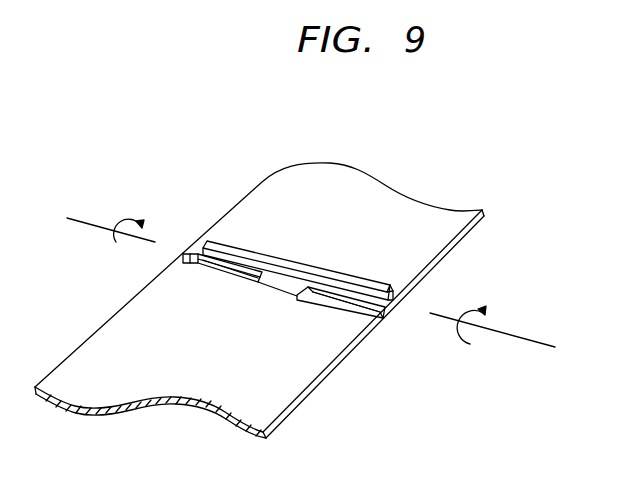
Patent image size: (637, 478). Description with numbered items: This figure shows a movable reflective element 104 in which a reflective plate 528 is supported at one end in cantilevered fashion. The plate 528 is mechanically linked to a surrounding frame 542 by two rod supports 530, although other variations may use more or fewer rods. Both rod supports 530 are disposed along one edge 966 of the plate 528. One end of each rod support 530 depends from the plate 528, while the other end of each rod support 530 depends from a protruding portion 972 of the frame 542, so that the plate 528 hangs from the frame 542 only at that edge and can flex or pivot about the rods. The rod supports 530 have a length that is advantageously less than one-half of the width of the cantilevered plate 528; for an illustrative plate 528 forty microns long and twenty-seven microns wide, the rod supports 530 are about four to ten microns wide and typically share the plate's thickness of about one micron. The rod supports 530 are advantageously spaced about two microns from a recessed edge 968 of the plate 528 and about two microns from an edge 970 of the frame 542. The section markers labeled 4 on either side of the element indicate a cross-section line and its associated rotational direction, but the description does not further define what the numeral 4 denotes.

The movable reflective element 104 is at (188, 108).
The plate 528 is at (297, 192).
The frame 542 is at (268, 400).
The recessed edge 968 is at (278, 262).
The edge 966 is at (366, 288).
The edge 970 is at (222, 276).
The protruding portion 972 is at (270, 288).
The rod supports 530 is at (341, 297).
The section line of FIG. 4 is at (88, 222).